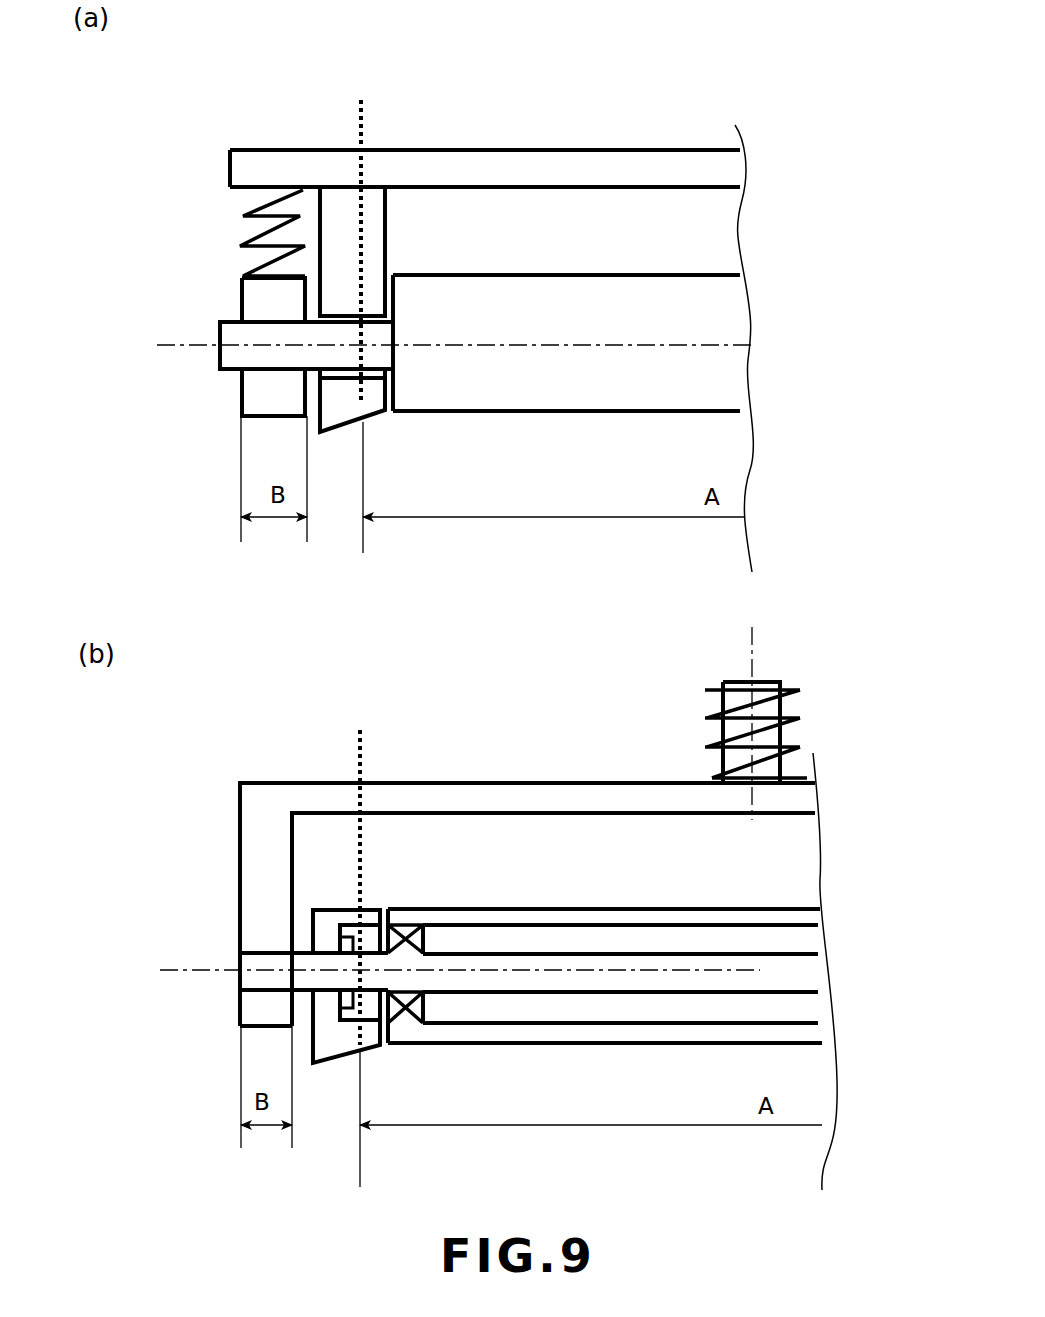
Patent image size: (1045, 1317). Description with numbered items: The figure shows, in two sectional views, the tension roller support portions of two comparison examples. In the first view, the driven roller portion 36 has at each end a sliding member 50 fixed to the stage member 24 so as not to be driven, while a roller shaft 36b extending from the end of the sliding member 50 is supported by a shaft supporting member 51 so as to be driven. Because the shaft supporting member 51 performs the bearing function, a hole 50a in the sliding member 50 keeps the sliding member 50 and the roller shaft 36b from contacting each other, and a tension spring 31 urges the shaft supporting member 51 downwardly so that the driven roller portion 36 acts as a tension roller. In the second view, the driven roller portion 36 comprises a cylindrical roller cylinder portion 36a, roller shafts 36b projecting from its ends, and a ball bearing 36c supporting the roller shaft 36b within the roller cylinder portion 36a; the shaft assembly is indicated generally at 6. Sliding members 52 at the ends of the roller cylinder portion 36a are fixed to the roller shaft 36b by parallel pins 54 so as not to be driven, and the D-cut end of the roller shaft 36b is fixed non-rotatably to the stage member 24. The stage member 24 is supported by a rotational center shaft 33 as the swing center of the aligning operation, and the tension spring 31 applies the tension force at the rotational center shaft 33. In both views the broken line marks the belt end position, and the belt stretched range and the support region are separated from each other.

The shaft 6 is at (600, 897).
The stage member 24 is at (485, 150).
The tension spring 31 is at (240, 217).
The rotational center shaft 33 is at (770, 712).
The driven roller portion 36 is at (565, 384).
The roller cylinder portion 36a is at (572, 1035).
The roller shaft 36b is at (220, 338).
The ball bearing 36c is at (413, 927).
The sliding member 50 is at (340, 408).
The hole 50a is at (372, 380).
The shaft supporting member 51 is at (250, 399).
The sliding member 52 is at (340, 1048).
The parallel pin 54 is at (345, 925).